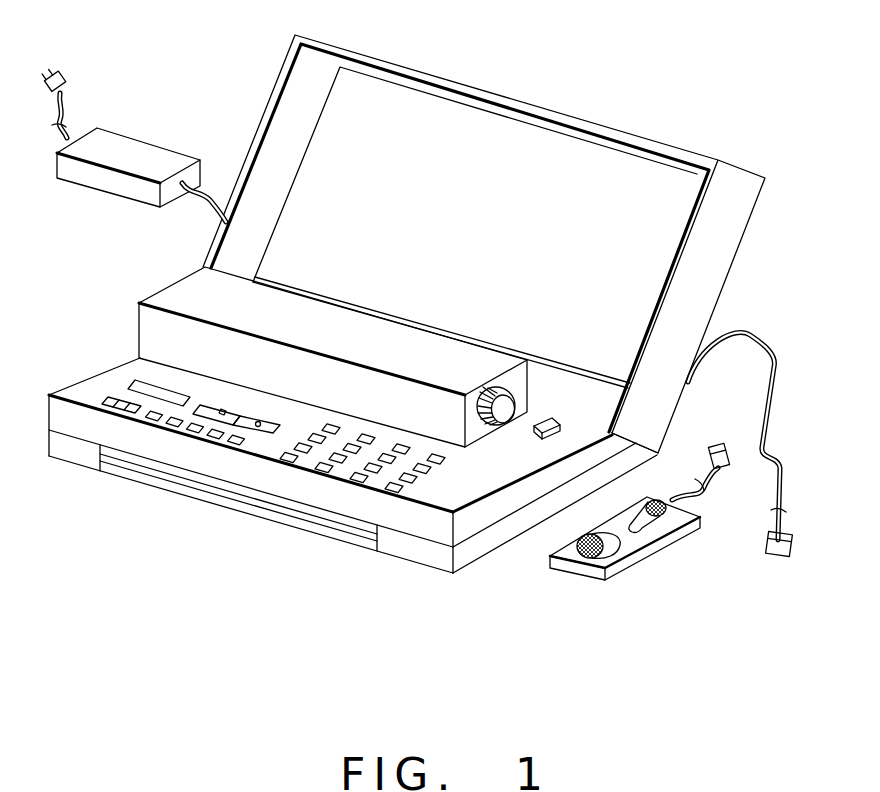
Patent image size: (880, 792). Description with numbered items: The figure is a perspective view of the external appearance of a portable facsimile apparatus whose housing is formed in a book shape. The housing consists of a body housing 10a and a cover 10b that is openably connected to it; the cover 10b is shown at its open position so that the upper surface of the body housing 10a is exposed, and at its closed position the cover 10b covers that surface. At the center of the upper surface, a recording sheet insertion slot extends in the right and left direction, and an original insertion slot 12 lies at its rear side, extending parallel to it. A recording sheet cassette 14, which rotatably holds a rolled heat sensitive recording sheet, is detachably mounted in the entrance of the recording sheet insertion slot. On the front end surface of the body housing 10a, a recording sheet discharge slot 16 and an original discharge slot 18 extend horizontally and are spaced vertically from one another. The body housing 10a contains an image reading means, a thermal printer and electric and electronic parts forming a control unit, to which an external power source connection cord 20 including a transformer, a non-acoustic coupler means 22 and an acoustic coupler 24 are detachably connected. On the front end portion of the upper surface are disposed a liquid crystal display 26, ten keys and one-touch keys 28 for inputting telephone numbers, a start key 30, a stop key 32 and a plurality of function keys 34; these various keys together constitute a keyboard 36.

The body housing 10a is at (78, 386).
The cover 10b is at (628, 160).
The original insertion slot 12 is at (540, 418).
The recording sheet cassette 14 is at (450, 350).
The recording sheet discharge slot 16 is at (334, 517).
The original discharge slot 18 is at (343, 540).
The external power source connection cord 20 is at (63, 90).
The non-acoustic coupler means 22 is at (773, 367).
The acoustic coupler 24 is at (640, 543).
The liquid crystal display 26 is at (175, 395).
The ten keys and one-touch keys 28 is at (457, 455).
The start key 30 is at (224, 410).
The stop key 32 is at (260, 422).
The function keys 34 is at (258, 438).
The keyboard 36 is at (299, 421).